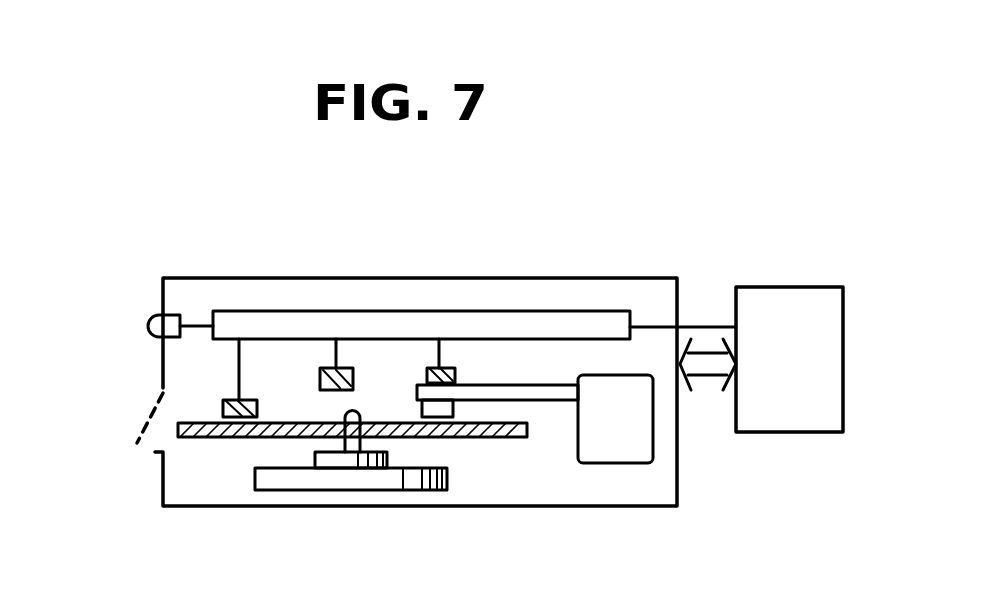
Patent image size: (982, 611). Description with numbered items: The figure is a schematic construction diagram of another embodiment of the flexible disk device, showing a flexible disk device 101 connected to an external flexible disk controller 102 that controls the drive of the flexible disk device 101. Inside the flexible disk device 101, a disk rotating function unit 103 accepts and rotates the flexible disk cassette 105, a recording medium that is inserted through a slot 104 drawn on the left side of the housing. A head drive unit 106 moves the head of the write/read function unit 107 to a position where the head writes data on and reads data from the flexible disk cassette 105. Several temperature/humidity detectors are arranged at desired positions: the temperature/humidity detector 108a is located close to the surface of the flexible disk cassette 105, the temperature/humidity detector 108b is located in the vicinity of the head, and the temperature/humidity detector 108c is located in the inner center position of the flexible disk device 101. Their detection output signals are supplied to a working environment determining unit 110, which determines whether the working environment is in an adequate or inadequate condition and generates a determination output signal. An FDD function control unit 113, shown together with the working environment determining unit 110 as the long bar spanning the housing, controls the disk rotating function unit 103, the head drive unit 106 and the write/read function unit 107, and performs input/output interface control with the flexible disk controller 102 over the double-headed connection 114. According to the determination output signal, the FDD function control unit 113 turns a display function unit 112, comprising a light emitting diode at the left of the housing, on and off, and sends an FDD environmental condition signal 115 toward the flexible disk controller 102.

The flexible disk device 101 is at (313, 278).
The flexible disk controller 102 is at (795, 287).
The disk rotating function unit 103 is at (370, 490).
The slot 104 is at (150, 418).
The flexible disk cassette 105 is at (246, 437).
The head drive unit 106 is at (615, 463).
The write/read function unit 107 is at (454, 407).
The temperature/humidity detector 108a is at (258, 402).
The temperature/humidity detector 108b is at (456, 377).
The temperature/humidity detector 108c is at (354, 378).
The working environment determining unit 110 is at (421, 261).
The FDD function control unit 113 is at (465, 311).
The display function unit 112 is at (159, 315).
The interface bus 114 is at (710, 378).
The FDD environmental condition signal 115 is at (700, 327).